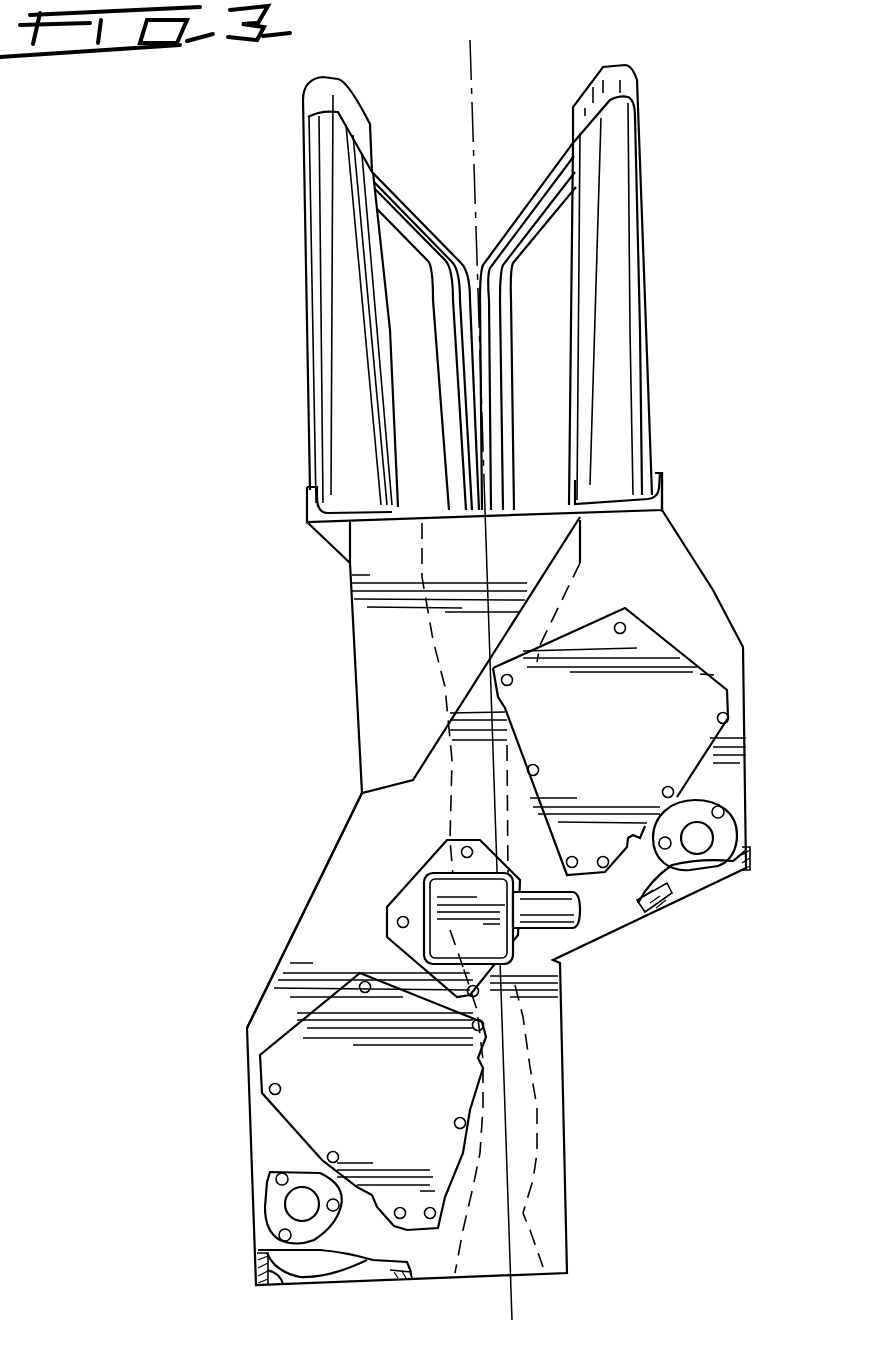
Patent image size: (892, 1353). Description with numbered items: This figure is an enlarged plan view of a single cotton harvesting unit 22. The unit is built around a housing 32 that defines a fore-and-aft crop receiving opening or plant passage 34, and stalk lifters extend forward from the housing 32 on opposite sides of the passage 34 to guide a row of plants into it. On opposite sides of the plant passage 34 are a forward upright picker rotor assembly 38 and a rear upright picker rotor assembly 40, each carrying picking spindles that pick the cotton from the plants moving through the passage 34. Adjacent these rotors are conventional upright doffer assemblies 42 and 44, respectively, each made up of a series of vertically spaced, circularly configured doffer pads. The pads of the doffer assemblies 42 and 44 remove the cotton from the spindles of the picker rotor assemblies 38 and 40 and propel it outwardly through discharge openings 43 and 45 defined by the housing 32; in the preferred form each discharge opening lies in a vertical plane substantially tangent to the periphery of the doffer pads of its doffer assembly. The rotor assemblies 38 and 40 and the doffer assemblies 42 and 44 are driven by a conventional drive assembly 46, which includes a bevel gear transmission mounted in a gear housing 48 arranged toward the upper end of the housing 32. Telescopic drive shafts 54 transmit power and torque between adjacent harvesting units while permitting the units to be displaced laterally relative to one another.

The fork carriage body assembly 22 is at (352, 766).
The housing 32 is at (362, 853).
The crop receiving opening 34 is at (437, 637).
The forward upright picker rotor assembly 38 is at (629, 747).
The rear upright picker rotor assembly 40 is at (396, 1106).
The upright doffer assembly 42 is at (726, 823).
The discharge opening 43 is at (722, 882).
The upright doffer assembly 44 is at (286, 1203).
The discharge opening 45 is at (279, 1284).
The drive assembly 46 is at (396, 897).
The gear housing 48 is at (440, 933).
The telescopic drive shaft 54 is at (557, 931).